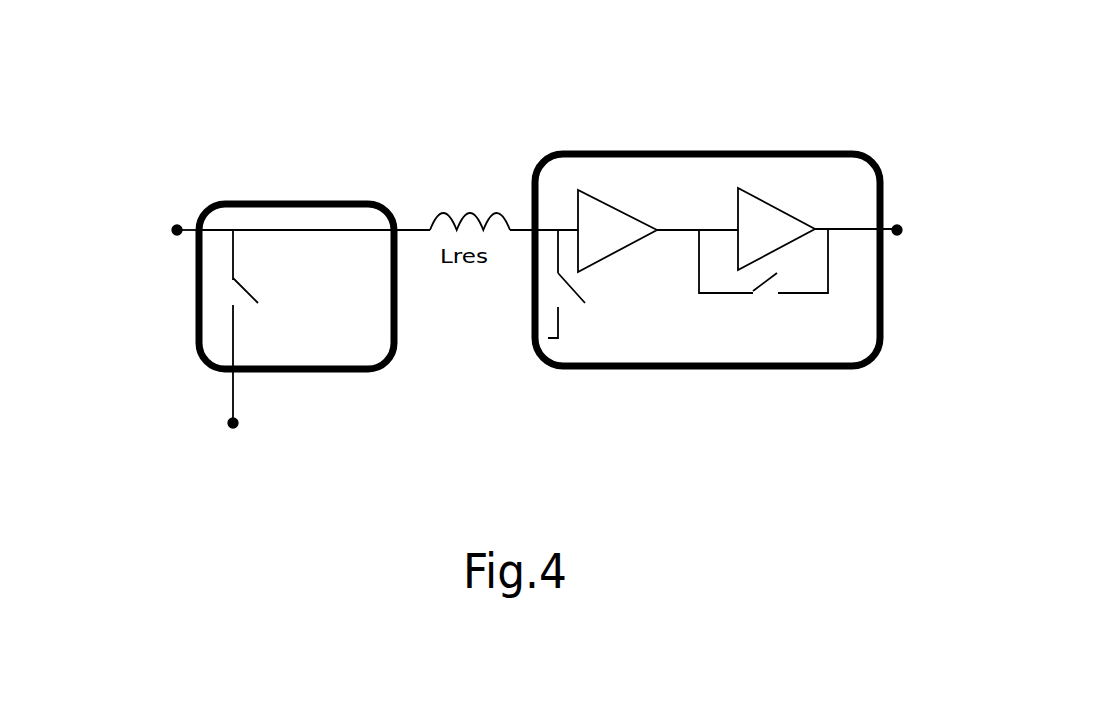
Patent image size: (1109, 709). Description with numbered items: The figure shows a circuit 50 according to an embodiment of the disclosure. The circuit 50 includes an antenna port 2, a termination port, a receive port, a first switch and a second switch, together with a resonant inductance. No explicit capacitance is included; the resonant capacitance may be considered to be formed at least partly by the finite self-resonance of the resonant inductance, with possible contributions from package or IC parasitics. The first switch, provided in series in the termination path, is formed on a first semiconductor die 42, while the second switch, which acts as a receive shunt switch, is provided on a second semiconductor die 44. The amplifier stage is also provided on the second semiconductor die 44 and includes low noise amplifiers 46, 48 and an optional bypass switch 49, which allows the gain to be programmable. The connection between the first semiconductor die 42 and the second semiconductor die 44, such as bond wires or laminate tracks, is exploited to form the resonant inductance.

The antenna port 2 is at (167, 218).
The first semiconductor die 42 is at (307, 205).
The second semiconductor die 44 is at (685, 245).
The low noise amplifier 46 is at (592, 219).
The low noise amplifier 48 is at (774, 209).
The bypass switch 49 is at (757, 318).
The circuit 50 is at (899, 125).